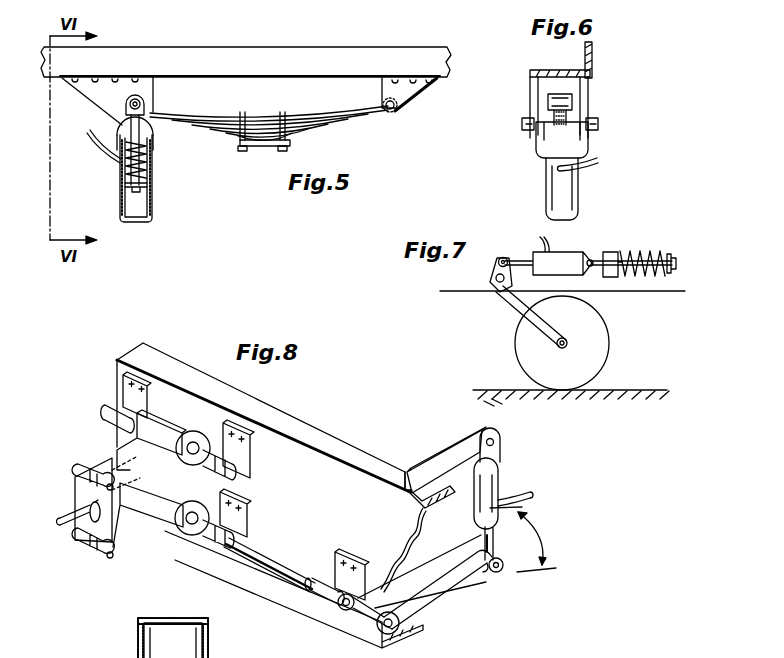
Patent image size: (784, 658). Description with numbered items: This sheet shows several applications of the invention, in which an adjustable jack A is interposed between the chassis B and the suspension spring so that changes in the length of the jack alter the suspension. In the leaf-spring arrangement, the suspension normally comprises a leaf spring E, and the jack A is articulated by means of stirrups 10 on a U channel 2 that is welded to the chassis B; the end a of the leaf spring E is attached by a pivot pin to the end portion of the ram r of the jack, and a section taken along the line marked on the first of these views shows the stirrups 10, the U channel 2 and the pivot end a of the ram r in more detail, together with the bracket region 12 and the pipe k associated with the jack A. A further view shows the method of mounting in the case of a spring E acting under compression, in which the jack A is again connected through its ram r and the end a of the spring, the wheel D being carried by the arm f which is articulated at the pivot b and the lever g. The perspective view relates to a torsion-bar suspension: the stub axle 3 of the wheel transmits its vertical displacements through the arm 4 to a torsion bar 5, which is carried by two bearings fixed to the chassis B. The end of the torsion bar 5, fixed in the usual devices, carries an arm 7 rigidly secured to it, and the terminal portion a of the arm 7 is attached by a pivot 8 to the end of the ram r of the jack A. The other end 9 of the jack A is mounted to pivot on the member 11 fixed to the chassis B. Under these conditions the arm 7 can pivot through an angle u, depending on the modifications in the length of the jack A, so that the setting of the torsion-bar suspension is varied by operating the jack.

In FIG. 5, the chassis B is at (268, 62).
In FIG. 7, the chassis B is at (663, 292).
In FIG. 8, the chassis B is at (286, 458).
In FIG. 5, the bracket plate 12 is at (107, 95).
In FIG. 5, the end of the leaf spring / terminal portion of the arm a is at (146, 104).
In FIG. 6, the end of the leaf spring / terminal portion of the arm a is at (572, 100).
In FIG. 7, the end of the leaf spring / terminal portion of the arm a is at (592, 260).
In FIG. 8, the end of the leaf spring / terminal portion of the arm a is at (494, 571).
In FIG. 5, the stirrups 10 is at (150, 132).
In FIG. 6, the stirrups 10 is at (540, 146).
In FIG. 5, the jack A is at (152, 192).
In FIG. 6, the jack A is at (582, 188).
In FIG. 7, the jack A is at (573, 258).
In FIG. 8, the jack A is at (500, 482).
In FIG. 5, the ram r is at (151, 160).
In FIG. 6, the ram r is at (576, 128).
In FIG. 8, the ram r is at (494, 538).
In FIG. 5, the fluid pipe k is at (105, 152).
In FIG. 6, the fluid pipe k is at (600, 166).
In FIG. 5, the leaf spring E is at (228, 137).
In FIG. 7, the leaf spring E is at (626, 258).
In FIG. 6, the U channel 2 is at (590, 113).
In FIG. 7, the pivot b is at (501, 258).
In FIG. 7, the lever g is at (492, 272).
In FIG. 7, the wheel arm f is at (521, 303).
In FIG. 7, the wheel D is at (598, 348).
In FIG. 8, the member 11 is at (452, 460).
In FIG. 8, the other end of the jack 9 is at (497, 441).
In FIG. 8, the stub axle 3 is at (65, 520).
In FIG. 8, the arm 4 is at (131, 531).
In FIG. 8, the torsion bar 5 is at (274, 567).
In FIG. 8, the arm 7 is at (408, 613).
In FIG. 8, the pivot 8 is at (503, 568).
In FIG. 8, the angle u is at (523, 539).